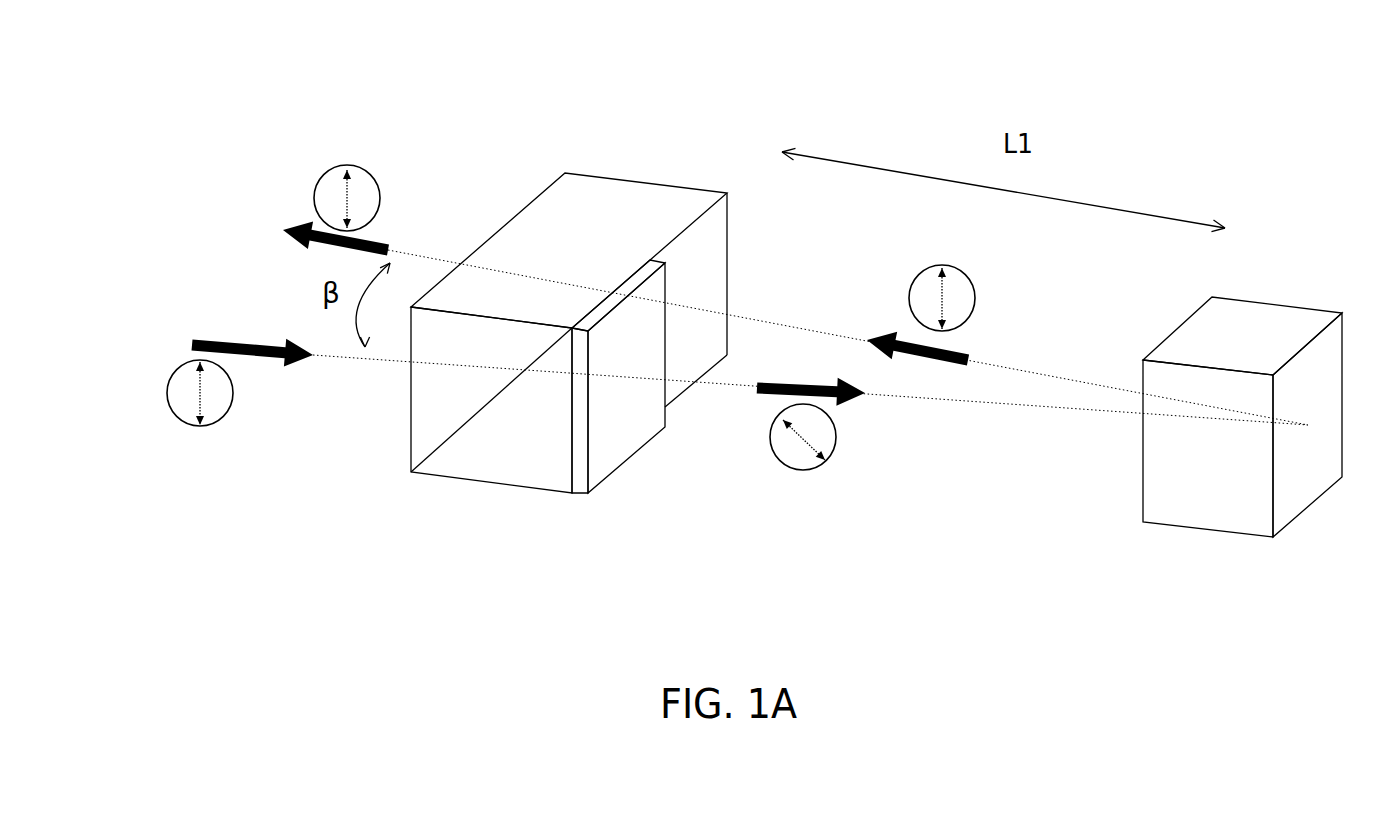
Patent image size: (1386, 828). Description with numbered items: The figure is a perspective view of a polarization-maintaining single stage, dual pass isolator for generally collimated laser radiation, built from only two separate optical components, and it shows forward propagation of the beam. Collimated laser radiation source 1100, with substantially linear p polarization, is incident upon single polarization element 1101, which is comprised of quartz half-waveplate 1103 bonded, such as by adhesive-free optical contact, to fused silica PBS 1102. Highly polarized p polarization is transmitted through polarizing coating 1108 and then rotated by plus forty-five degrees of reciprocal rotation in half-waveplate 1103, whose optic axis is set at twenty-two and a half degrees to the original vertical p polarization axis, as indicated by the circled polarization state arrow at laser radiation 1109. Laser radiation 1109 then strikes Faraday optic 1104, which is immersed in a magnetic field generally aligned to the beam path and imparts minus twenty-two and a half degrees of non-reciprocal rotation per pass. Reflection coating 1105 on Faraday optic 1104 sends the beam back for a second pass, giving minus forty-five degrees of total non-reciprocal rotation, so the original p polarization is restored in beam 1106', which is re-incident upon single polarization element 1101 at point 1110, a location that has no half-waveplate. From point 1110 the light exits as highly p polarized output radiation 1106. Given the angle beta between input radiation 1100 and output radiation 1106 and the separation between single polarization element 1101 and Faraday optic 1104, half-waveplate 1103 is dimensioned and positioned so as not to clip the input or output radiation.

The collimated laser radiation source 1100 is at (690, 373).
The single polarization element 1101 is at (595, 152).
The fused silica PBS 1102 is at (517, 442).
The quartz half-waveplate 1103 is at (620, 438).
The Faraday optic 1104 is at (1183, 540).
The reflection coating 1105 is at (1313, 448).
The output radiation 1106 is at (760, 295).
The beam 1106' is at (961, 315).
The polarizing coating 1108 is at (475, 411).
The laser radiation 1109 is at (851, 424).
The point 1110 is at (692, 298).